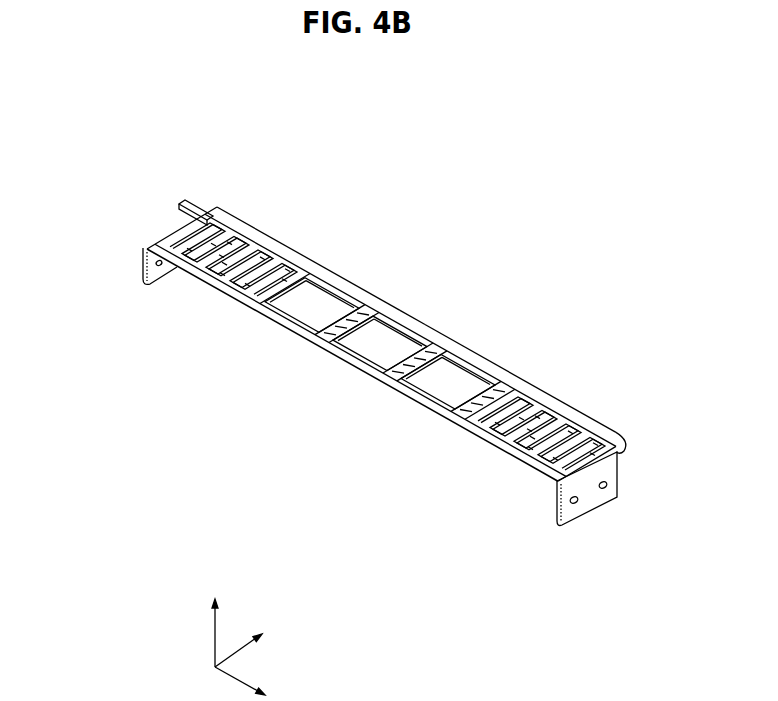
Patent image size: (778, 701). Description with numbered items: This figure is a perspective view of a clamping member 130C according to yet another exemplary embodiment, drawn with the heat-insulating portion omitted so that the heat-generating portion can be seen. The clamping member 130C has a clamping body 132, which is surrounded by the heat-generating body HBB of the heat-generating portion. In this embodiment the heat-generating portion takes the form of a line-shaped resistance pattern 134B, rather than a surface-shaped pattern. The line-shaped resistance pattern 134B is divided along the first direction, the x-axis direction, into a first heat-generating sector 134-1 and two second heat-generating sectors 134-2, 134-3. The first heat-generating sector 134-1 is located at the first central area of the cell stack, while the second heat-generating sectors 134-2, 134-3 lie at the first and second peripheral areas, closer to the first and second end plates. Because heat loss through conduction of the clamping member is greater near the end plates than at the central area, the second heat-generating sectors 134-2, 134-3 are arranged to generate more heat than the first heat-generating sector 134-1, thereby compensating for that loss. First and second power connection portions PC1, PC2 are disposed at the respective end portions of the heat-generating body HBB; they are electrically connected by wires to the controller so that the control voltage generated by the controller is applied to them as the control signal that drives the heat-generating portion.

The clamping member 130C is at (341, 95).
The clamping body 132 is at (619, 471).
The line-shaped resistance pattern 134B is at (386, 238).
The first heat-generating sector 134-1 is at (454, 422).
The second heat-generating sector 134-2 is at (553, 478).
The second heat-generating sector 134-3 is at (246, 305).
The first power connection portion PC1 is at (221, 207).
The second power connection portion PC2 is at (622, 428).
The heat-generating body HBB is at (409, 316).